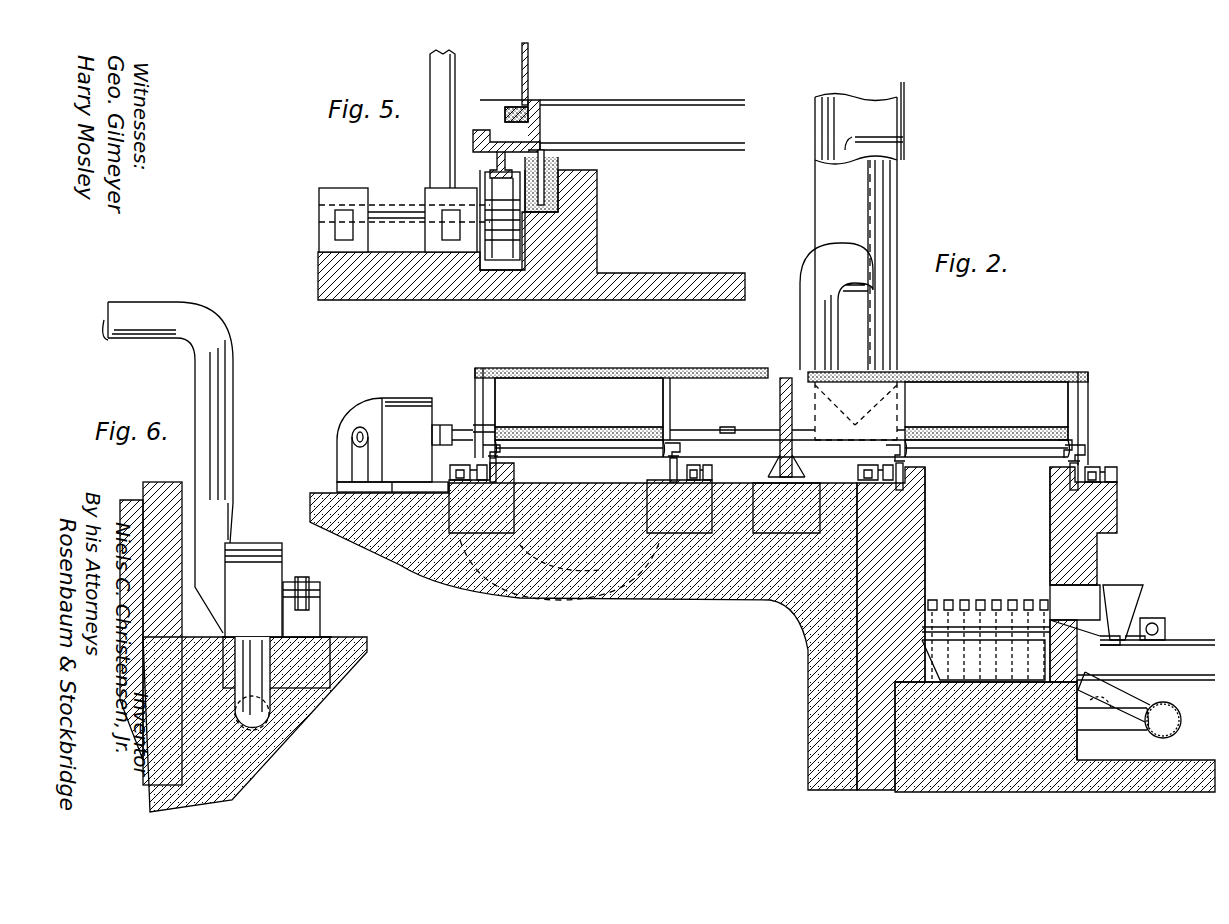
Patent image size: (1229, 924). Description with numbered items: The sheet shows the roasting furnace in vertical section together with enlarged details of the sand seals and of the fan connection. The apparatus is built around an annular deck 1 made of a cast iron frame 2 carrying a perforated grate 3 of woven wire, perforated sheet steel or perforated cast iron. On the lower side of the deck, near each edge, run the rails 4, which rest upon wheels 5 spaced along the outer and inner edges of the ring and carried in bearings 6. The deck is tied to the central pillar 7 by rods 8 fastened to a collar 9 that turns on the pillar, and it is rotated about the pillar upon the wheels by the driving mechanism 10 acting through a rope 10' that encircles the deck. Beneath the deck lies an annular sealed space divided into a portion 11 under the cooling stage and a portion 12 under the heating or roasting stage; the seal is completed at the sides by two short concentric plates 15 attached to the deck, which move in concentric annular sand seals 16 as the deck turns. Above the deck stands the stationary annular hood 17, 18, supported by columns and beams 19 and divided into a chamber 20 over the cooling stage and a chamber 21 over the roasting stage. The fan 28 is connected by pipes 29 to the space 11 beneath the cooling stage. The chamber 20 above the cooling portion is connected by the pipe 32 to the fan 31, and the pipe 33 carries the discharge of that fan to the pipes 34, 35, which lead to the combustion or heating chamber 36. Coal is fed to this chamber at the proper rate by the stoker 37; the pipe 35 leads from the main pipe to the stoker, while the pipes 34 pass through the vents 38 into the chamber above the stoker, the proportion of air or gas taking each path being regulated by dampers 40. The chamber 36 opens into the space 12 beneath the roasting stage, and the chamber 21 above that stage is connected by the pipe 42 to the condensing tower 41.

In FIG. 2, the annular deck 1 is at (470, 430).
In FIG. 5, the cast iron frame 2 is at (642, 132).
In FIG. 2, the cast iron frame 2 is at (781, 448).
In FIG. 5, the perforated grate 3 is at (690, 100).
In FIG. 2, the perforated grate 3 is at (1018, 476).
In FIG. 5, the rails 4 is at (497, 165).
In FIG. 2, the rails 4 is at (1088, 455).
In FIG. 5, the wheels 5 is at (500, 250).
In FIG. 2, the wheels 5 is at (1045, 490).
In FIG. 5, the bearings 6 is at (368, 198).
In FIG. 2, the bearings 6 is at (1117, 478).
In FIG. 2, the central pillar 7 is at (780, 412).
In FIG. 2, the rods 8 is at (840, 455).
In FIG. 2, the collar 9 is at (848, 417).
In FIG. 2, the driving mechanism 10 is at (511, 447).
In FIG. 5, the rope 10' is at (500, 114).
In FIG. 2, the rope 10' is at (1094, 435).
In FIG. 5, the sealed space portion beneath cooling stage 11 is at (645, 237).
In FIG. 2, the sealed space portion beneath cooling stage 11 is at (571, 472).
In FIG. 2, the sealed space portion beneath heating stage 12 is at (976, 480).
In FIG. 5, the concentric cylinders or plates 15 is at (544, 160).
In FIG. 2, the concentric cylinders or plates 15 is at (1050, 453).
In FIG. 5, the sand seals 16 is at (550, 190).
In FIG. 5, the hood 17 is at (530, 72).
In FIG. 2, the hood 17 is at (670, 410).
In FIG. 2, the hood 18 is at (1080, 410).
In FIG. 2, the columns and beams 19 is at (1105, 376).
In FIG. 2, the cooling chamber 20 is at (579, 409).
In FIG. 2, the heating chamber 21 is at (986, 411).
In FIG. 2, the fan 28 is at (405, 385).
In FIG. 2, the pipes 29 is at (505, 585).
In FIG. 6, the fan 31 is at (255, 550).
In FIG. 6, the pipe 32 is at (148, 310).
In FIG. 6, the pipe 33 is at (270, 723).
In FIG. 2, the pipe 33 is at (1181, 720).
In FIG. 2, the pipes 34 is at (1140, 740).
In FIG. 2, the pipe 35 is at (1140, 690).
In FIG. 2, the combustion or heating chamber 36 is at (987, 574).
In FIG. 2, the stoker 37 is at (1010, 650).
In FIG. 2, the vents 38 is at (988, 600).
In FIG. 2, the dampers 40 is at (1085, 738).
In FIG. 2, the condensing tower 41 is at (893, 213).
In FIG. 2, the pipe 42 is at (795, 316).